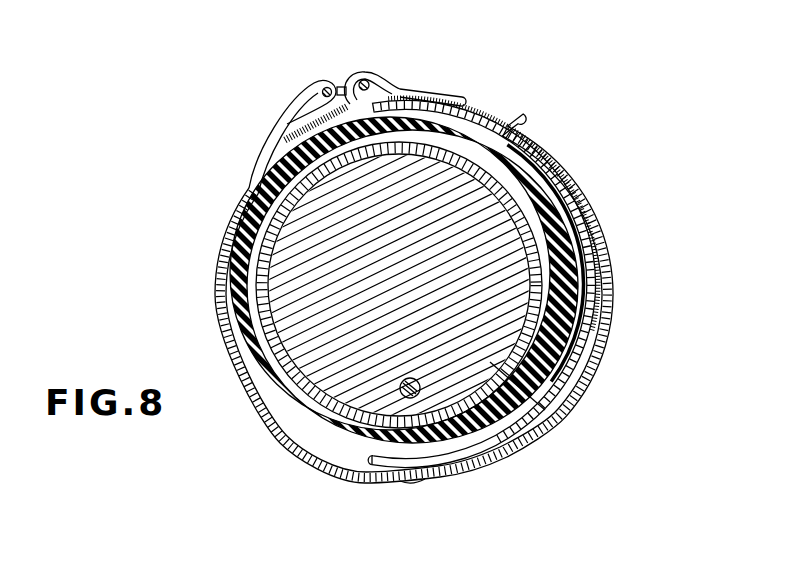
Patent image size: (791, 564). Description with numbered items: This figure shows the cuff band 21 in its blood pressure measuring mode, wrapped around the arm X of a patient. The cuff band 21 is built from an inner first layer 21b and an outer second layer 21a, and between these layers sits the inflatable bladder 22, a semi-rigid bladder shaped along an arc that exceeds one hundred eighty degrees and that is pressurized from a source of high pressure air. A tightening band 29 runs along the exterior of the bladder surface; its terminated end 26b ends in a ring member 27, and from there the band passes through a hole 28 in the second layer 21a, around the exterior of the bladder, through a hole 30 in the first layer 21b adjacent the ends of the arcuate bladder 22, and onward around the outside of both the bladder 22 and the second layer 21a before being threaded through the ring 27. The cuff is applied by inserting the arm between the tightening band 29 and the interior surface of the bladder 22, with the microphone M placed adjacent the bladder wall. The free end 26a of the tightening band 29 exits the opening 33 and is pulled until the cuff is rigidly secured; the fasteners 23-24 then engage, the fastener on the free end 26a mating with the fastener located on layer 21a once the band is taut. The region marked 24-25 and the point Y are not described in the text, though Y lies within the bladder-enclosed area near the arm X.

The cuff band 21 is at (612, 367).
The second layer 21a is at (613, 282).
The first layer 21b is at (588, 380).
The inflatable bladder 22 is at (500, 152).
The fasteners 23-24 is at (448, 94).
The strap section 24-25 is at (590, 250).
The free end of tightening band 26a is at (424, 84).
The terminated end of tightening band 26b is at (297, 98).
The ring member 27 is at (340, 86).
The hole in second layer 28 is at (250, 190).
The tightening band 29 is at (491, 132).
The hole in first layer 30 is at (410, 470).
The opening 33 is at (386, 88).
The microphone M is at (437, 452).
The arm X is at (545, 410).
The reference point Y is at (404, 380).